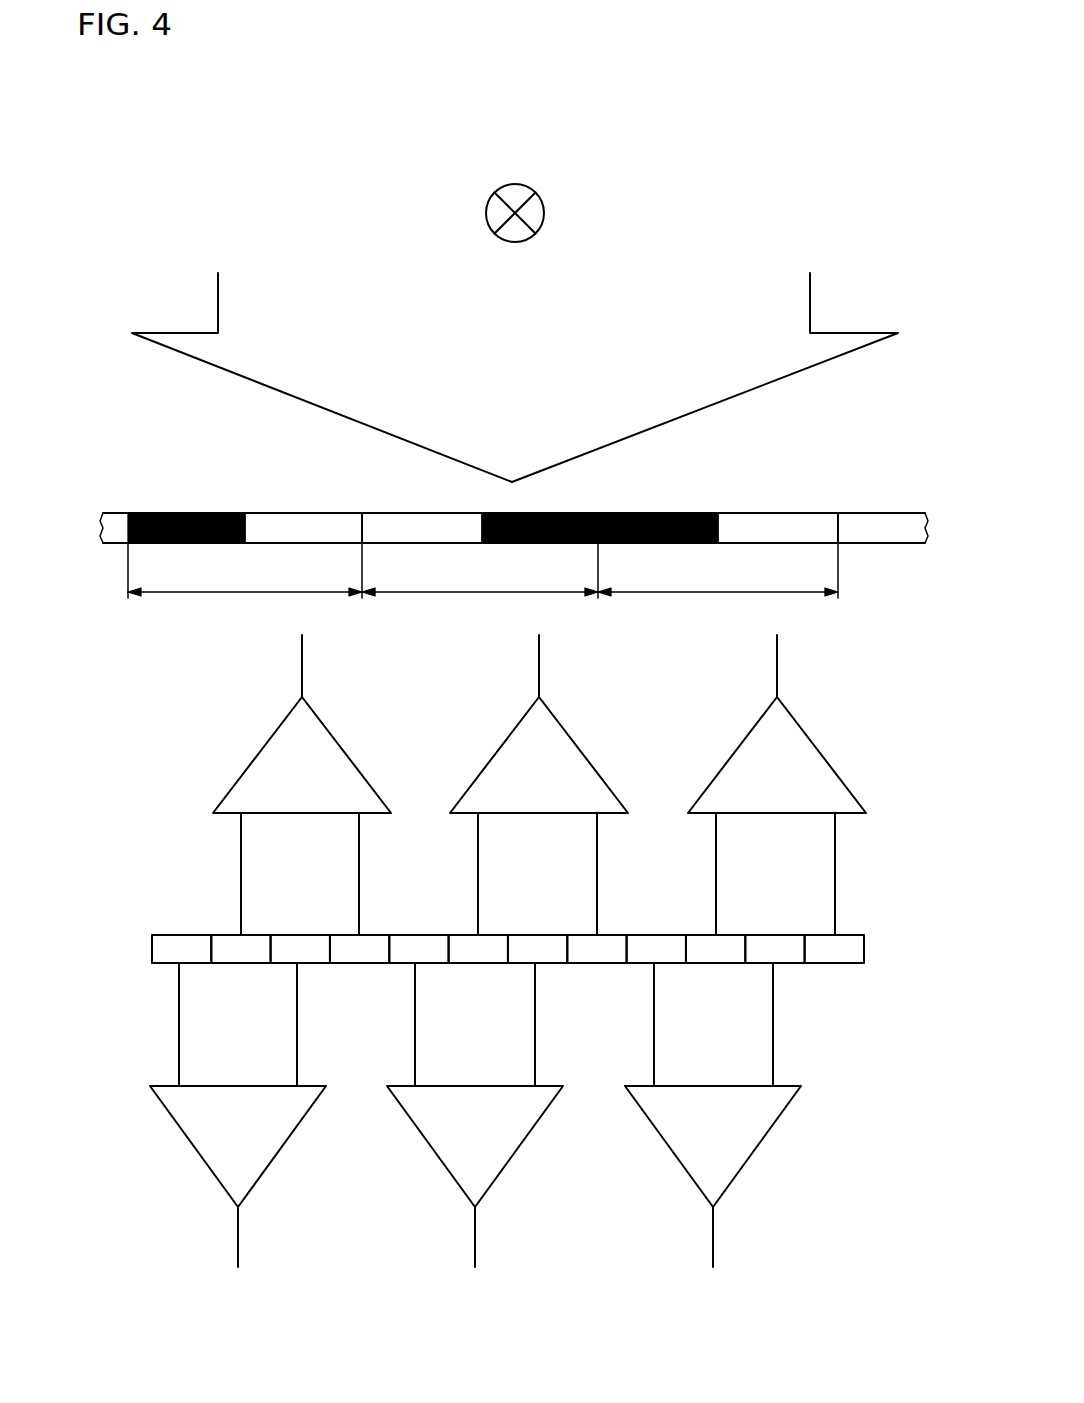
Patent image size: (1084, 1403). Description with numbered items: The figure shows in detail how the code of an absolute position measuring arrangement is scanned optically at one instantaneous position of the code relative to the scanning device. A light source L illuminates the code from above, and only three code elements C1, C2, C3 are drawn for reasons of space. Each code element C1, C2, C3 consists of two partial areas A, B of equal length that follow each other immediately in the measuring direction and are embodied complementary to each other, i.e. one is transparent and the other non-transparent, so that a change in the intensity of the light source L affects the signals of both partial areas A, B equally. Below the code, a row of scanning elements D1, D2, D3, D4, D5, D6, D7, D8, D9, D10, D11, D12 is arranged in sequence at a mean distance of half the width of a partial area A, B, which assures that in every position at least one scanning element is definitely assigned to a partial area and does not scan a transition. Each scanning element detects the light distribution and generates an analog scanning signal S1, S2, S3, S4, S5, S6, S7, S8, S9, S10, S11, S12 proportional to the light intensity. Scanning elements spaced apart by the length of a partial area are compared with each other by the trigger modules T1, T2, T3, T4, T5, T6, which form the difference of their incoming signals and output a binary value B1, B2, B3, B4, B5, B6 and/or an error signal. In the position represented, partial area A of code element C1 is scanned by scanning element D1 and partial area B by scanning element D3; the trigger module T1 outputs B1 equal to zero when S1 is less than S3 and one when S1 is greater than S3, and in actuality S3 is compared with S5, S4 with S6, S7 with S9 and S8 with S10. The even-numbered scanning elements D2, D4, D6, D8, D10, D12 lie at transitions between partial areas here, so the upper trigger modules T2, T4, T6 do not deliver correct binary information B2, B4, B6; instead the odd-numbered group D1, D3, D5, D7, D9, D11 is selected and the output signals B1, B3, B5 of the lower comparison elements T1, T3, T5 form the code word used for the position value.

The light source L is at (544, 211).
The partial area A is at (180, 512).
The partial area B is at (301, 520).
The code element C1 is at (245, 585).
The code element C2 is at (480, 585).
The code element C3 is at (718, 585).
The trigger module T1 is at (283, 1146).
The trigger module T2 is at (337, 742).
The trigger module T3 is at (520, 1146).
The trigger module T4 is at (574, 742).
The trigger module T5 is at (758, 1146).
The trigger module T6 is at (812, 742).
The binary information B1 is at (238, 1250).
The binary information B2 is at (302, 662).
The binary information B3 is at (475, 1250).
The binary information B4 is at (539, 662).
The binary information B5 is at (713, 1250).
The binary information B6 is at (777, 662).
The scanning signal S1 is at (179, 1046).
The scanning signal S2 is at (241, 848).
The scanning signal S3 is at (297, 1048).
The scanning signal S4 is at (359, 848).
The scanning signal S5 is at (415, 1048).
The scanning signal S6 is at (478, 848).
The scanning signal S7 is at (535, 1048).
The scanning signal S8 is at (597, 848).
The scanning signal S9 is at (654, 1048).
The scanning signal S10 is at (716, 848).
The scanning signal S11 is at (773, 1048).
The scanning signal S12 is at (835, 848).
The scanning element D1 is at (182, 948).
The scanning element D2 is at (232, 945).
The scanning element D3 is at (298, 948).
The scanning element D4 is at (350, 945).
The scanning element D5 is at (418, 948).
The scanning element D6 is at (470, 945).
The scanning element D7 is at (537, 948).
The scanning element D8 is at (587, 945).
The scanning element D9 is at (655, 948).
The scanning element D10 is at (705, 945).
The scanning element D11 is at (773, 948).
The scanning element D12 is at (826, 945).